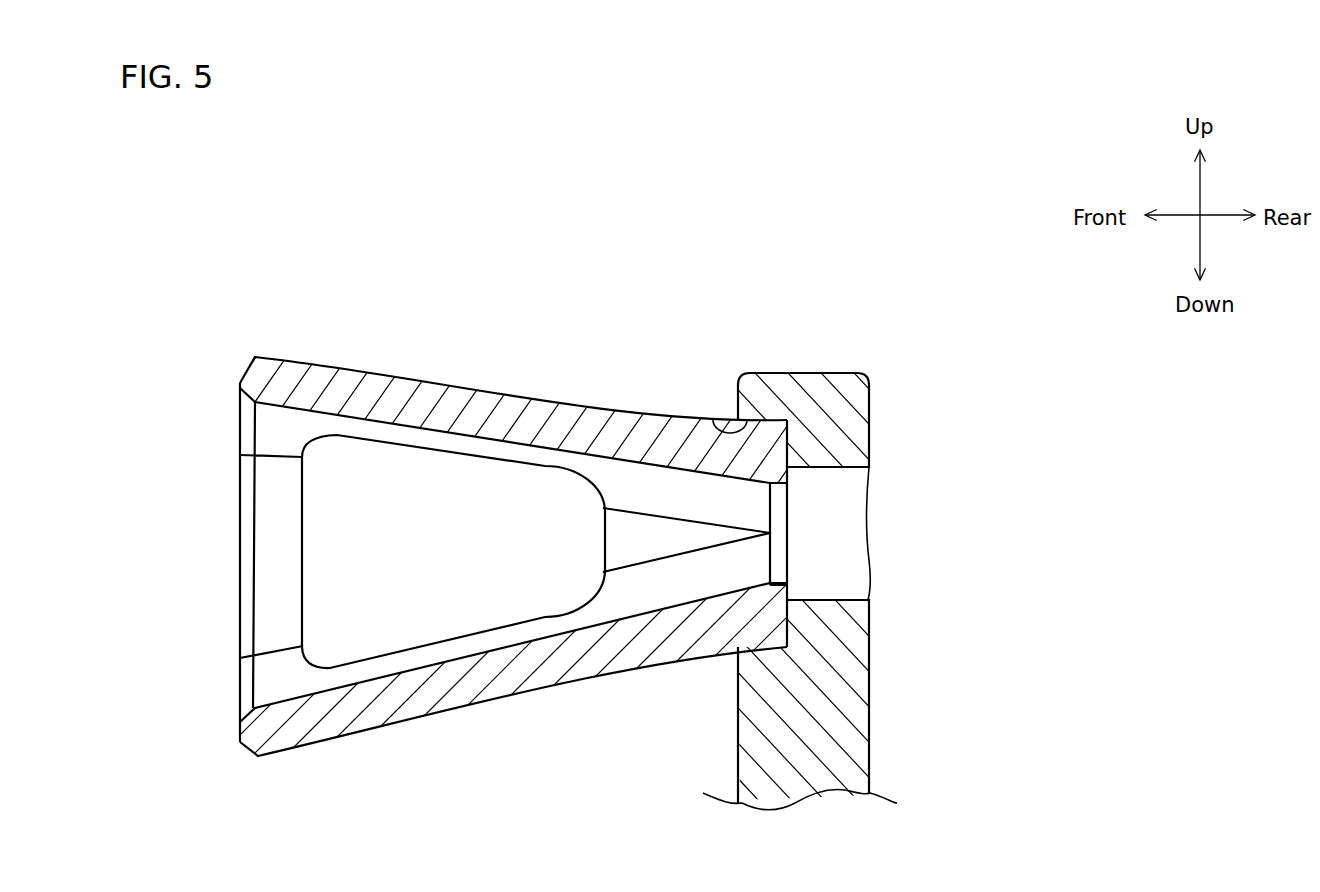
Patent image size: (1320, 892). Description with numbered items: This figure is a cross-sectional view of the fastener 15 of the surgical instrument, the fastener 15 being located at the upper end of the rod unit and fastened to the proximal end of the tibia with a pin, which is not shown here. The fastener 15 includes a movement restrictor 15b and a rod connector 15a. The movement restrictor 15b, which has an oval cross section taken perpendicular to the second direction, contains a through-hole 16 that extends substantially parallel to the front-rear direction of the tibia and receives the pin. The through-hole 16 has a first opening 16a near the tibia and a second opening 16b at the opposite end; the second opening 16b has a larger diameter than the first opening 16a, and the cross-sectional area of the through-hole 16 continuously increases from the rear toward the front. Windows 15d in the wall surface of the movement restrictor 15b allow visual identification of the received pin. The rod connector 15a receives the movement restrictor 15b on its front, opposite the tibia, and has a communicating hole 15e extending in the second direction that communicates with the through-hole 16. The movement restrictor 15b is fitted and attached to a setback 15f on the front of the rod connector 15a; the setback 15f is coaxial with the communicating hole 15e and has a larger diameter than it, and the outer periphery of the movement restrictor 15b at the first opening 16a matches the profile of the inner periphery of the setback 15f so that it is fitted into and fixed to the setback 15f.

The fastener 15 is at (663, 527).
The rod connector 15a is at (870, 732).
The movement restrictor 15b is at (525, 398).
The windows 15d is at (398, 652).
The communicating hole 15e is at (830, 600).
The setback 15f is at (712, 418).
The through-hole 16 is at (540, 562).
The first opening 16a is at (787, 532).
The second opening 16b is at (245, 555).